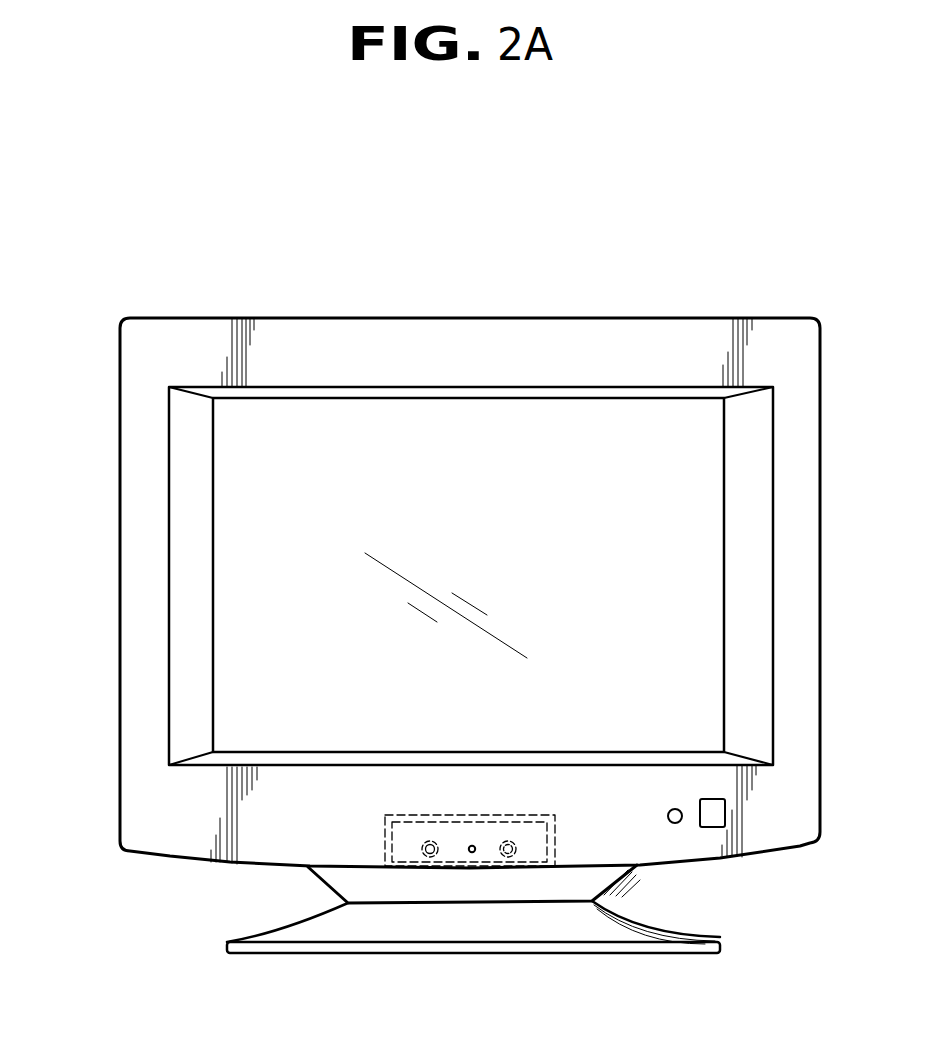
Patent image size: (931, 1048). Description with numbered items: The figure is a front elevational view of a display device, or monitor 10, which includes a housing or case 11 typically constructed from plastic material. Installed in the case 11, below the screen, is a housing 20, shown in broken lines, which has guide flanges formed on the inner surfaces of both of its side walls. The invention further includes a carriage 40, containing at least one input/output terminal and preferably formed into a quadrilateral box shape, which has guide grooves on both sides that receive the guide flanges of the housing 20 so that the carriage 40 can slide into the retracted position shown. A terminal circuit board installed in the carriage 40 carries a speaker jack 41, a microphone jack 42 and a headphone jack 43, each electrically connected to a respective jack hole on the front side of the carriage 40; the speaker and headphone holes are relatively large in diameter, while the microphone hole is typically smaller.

The monitor 10 is at (430, 450).
The case 11 is at (183, 843).
The housing 20 is at (383, 840).
The carriage 40 is at (537, 843).
The speaker jack 41 is at (430, 857).
The microphone jack 42 is at (472, 853).
The headphone jack 43 is at (508, 857).